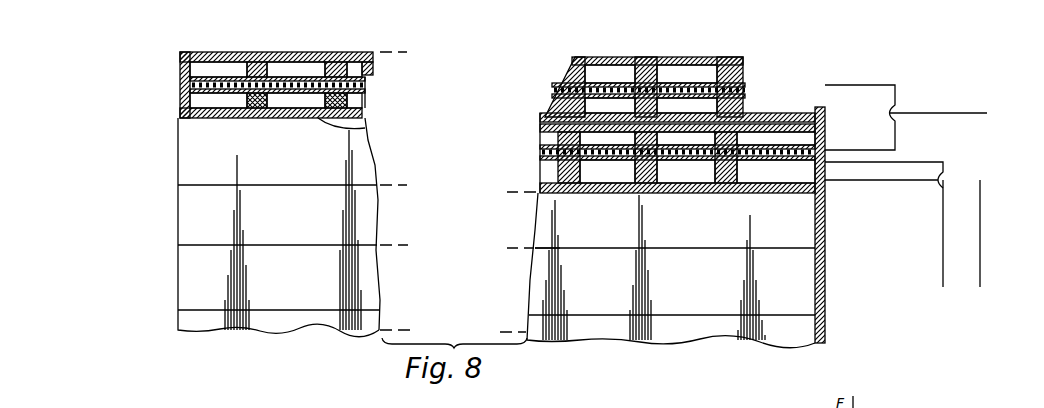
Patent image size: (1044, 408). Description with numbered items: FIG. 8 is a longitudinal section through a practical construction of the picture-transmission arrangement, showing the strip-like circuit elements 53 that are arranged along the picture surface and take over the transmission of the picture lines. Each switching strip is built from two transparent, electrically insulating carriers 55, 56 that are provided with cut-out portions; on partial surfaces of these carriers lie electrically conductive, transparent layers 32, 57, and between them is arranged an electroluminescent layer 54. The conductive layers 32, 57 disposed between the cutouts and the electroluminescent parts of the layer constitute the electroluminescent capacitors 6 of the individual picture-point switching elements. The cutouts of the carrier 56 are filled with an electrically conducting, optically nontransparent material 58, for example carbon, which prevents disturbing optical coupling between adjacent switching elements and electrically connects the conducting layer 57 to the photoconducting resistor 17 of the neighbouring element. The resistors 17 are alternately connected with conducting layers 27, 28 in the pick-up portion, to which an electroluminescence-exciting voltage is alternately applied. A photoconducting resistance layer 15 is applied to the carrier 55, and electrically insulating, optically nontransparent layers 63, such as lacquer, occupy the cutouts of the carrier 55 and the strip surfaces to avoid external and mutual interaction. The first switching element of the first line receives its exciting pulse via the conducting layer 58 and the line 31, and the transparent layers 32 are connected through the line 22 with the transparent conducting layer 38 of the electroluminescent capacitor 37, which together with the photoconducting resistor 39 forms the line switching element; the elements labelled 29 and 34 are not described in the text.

The electroluminescent capacitor 6 is at (615, 80).
The photoconducting resistance layer 15 is at (217, 54).
The photoconducting resistor 17 is at (288, 120).
The line 22 is at (896, 93).
The electrical conducting layer 27 is at (617, 194).
The electrical conducting layer 28 is at (702, 194).
The member 29 (44) 29 is at (362, 126).
The line 31 is at (962, 116).
The transparent conductive layer 32 is at (302, 74).
The arm 34 is at (944, 166).
The electroluminescent capacitor 37 is at (825, 160).
The electrically conductive layer 38 is at (805, 165).
The photoconducting resistor 39 is at (752, 181).
The strip-like circuit element 53 is at (192, 255).
The electroluminescent layer 54 is at (364, 86).
The transparent electrically insulating carrier 55 is at (280, 76).
The transparent electrically insulating carrier 56 is at (208, 120).
The transparent conductive layer 57 is at (218, 99).
The electrically conducting optically nontransparent material 58 is at (367, 103).
The electrically insulating optically nontransparent layer 63 is at (187, 73).